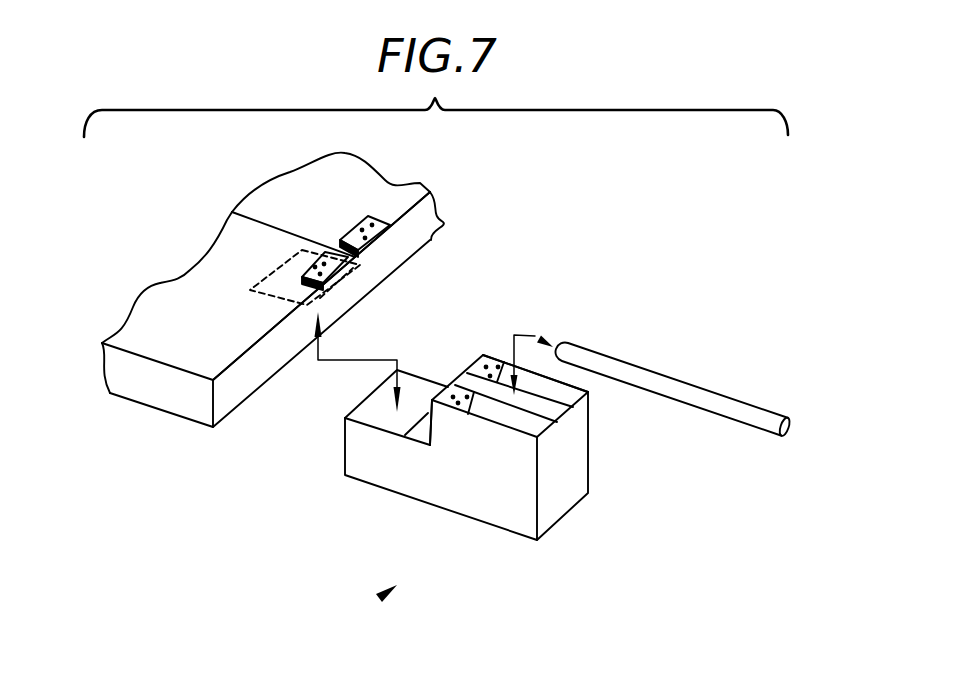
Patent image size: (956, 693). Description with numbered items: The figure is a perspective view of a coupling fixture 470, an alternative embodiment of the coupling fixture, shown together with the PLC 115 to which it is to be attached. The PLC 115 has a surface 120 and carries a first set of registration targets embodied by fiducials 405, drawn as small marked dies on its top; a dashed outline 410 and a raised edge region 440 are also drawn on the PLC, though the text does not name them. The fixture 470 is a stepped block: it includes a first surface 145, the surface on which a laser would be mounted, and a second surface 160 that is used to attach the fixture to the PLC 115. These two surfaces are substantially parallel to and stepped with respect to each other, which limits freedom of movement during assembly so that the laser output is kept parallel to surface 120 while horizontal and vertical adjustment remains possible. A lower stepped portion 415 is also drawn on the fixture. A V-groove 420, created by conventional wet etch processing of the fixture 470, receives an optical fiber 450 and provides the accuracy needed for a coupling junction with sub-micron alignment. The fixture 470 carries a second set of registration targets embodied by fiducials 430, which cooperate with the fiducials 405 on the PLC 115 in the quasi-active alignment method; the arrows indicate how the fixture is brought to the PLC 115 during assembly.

The PLC 115 is at (142, 275).
The surface 120 is at (203, 252).
The fiducials 405 is at (367, 217).
The hidden recess outline 410 is at (250, 292).
The substrate edge rail 440 is at (420, 249).
The fixture step 415 is at (380, 413).
The V-groove 420 is at (550, 422).
The second surface 160 is at (428, 440).
The first surface 145 is at (586, 393).
The fiducials 430 is at (455, 385).
The optical fiber 450 is at (697, 386).
The coupling fixture 470 is at (379, 599).